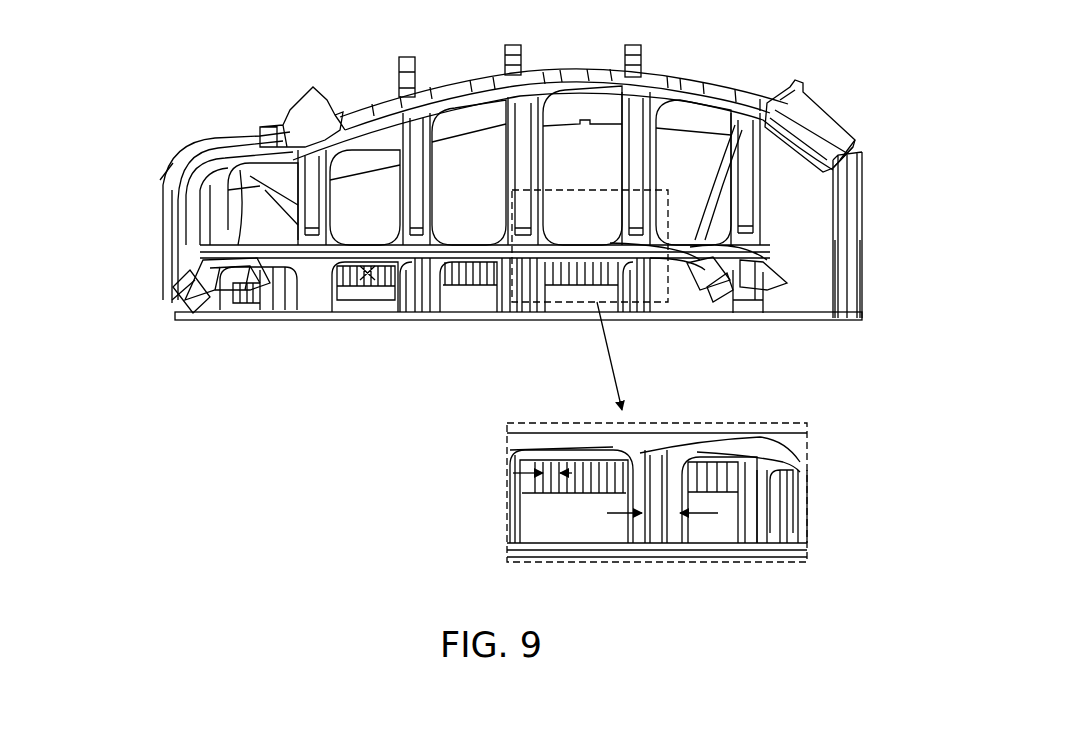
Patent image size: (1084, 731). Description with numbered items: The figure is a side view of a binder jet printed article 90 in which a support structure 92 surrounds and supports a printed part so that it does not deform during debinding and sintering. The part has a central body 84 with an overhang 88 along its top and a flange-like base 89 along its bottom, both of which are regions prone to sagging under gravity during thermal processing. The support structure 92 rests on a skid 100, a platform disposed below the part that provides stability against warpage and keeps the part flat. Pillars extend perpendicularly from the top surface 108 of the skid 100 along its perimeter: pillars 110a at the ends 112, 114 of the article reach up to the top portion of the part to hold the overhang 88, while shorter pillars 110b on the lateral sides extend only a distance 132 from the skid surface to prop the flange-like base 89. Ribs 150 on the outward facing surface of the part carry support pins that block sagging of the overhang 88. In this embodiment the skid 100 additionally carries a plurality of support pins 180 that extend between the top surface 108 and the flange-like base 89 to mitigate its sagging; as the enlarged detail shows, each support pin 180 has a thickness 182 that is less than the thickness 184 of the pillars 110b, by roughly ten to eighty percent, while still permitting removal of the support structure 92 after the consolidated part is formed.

The central body 84 is at (675, 145).
The overhang 88 is at (830, 137).
The flange-like base 89 is at (757, 267).
The binder jet printed article 90 is at (820, 83).
The support structure 92 is at (876, 278).
The skid 100 is at (835, 320).
The top surface of the skid 108 is at (350, 312).
The pillars 110a is at (175, 175).
The pillars 110b is at (412, 317).
The end of the printed article 112 is at (157, 243).
The end of the printed article 114 is at (875, 200).
The distance of the pillars 110b 132 is at (540, 115).
The ribs 150 is at (405, 57).
The support pins 180 is at (468, 300).
The thickness of the support pins 182 is at (520, 478).
The thickness of the pillars 184 is at (737, 540).